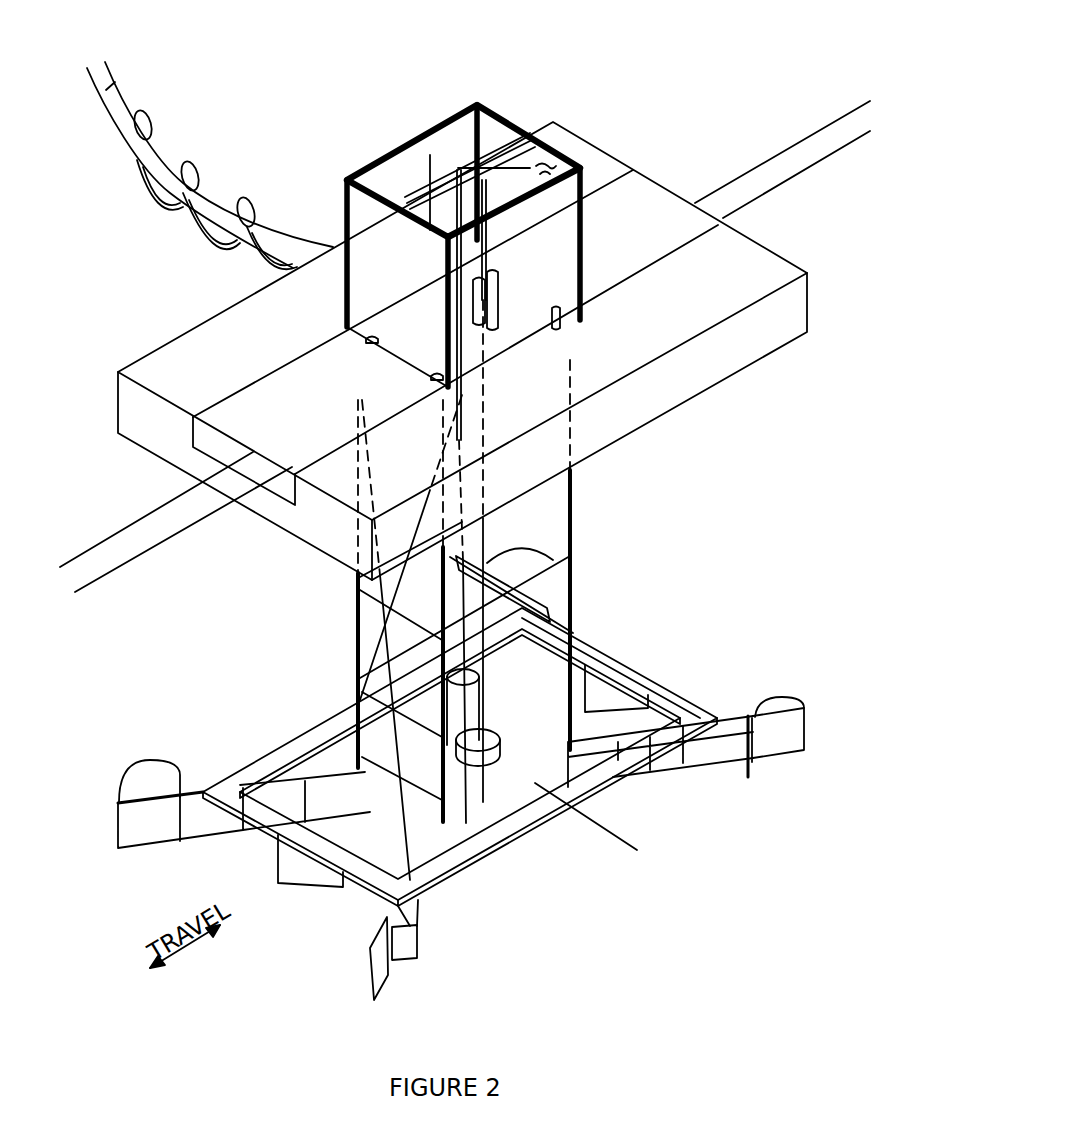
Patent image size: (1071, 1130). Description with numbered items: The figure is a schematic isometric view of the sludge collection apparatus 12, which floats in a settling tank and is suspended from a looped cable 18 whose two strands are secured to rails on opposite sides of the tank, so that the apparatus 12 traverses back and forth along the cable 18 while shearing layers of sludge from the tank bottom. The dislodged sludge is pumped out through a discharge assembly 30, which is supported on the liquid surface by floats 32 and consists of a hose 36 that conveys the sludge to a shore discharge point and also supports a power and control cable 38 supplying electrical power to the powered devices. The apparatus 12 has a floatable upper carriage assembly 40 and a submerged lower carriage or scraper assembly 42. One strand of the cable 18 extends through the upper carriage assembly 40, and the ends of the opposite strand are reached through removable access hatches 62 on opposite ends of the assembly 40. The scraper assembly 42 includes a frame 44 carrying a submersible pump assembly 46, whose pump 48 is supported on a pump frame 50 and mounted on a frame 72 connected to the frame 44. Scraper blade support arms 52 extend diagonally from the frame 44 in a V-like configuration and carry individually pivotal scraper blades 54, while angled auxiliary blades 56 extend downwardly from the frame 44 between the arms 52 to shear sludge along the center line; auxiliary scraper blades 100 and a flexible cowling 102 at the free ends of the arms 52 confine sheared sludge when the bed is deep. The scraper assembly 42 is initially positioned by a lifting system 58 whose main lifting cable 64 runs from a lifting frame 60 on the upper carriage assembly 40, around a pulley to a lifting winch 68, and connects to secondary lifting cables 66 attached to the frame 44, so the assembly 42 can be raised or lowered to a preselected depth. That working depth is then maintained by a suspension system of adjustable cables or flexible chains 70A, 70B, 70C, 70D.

The sludge collection apparatus 12 is at (642, 133).
The looped cable 18 is at (760, 167).
The discharge assembly 30 is at (163, 152).
The floats 32 is at (202, 162).
The hose 36 is at (110, 88).
The power and control cable 38 is at (152, 206).
The upper carriage assembly 40 is at (727, 388).
The lower carriage or scraper assembly 42 is at (302, 727).
The frame 44 is at (594, 630).
The submersible pump assembly 46 is at (637, 850).
The pump 48 is at (500, 806).
The pump frame 50 is at (476, 803).
The scraper blade support arms 52 is at (190, 780).
The scraper blades 54 is at (840, 750).
The auxiliary blades 56 is at (336, 881).
The lifting system 58 is at (470, 451).
The lifting frame 60 is at (440, 140).
The removable access hatches 62 is at (282, 374).
The main lifting cable 64 is at (453, 186).
The secondary lifting cables 66 is at (494, 572).
The lifting winch 68 is at (544, 170).
The adjustable cable or flexible chain 70A is at (360, 570).
The adjustable cable or flexible chain 70B is at (558, 459).
The adjustable cable or flexible chain 70C is at (362, 617).
The adjustable cable or flexible chain 70D is at (476, 398).
The frame 72 is at (356, 712).
The auxiliary scraper blades 100 is at (404, 958).
The flexible cowling 102 is at (132, 784).